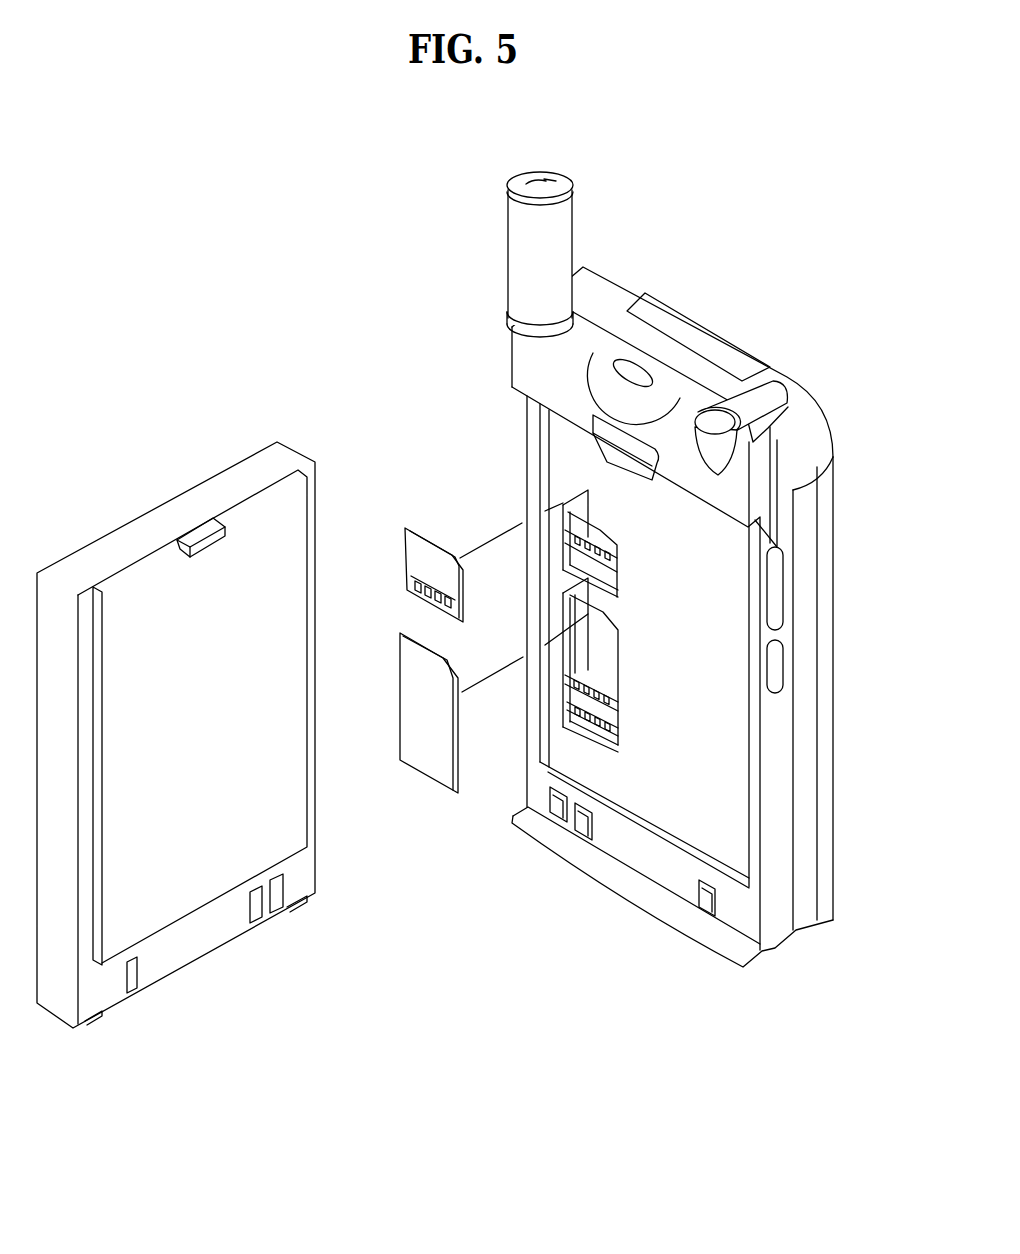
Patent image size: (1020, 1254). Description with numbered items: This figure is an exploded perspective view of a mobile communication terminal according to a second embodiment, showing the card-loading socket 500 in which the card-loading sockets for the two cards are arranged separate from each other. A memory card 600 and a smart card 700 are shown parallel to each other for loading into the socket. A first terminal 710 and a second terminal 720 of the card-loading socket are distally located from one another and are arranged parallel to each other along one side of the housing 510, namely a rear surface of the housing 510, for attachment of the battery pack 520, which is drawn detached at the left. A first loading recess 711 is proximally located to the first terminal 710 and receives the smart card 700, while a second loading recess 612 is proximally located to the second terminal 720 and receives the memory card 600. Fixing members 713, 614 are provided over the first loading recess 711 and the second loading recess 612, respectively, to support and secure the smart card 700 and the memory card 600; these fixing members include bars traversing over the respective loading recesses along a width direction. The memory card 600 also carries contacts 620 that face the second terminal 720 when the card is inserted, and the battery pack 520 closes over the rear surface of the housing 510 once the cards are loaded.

The card-loading socket 500 is at (725, 283).
The housing 510 is at (837, 603).
The battery pack 520 is at (143, 510).
The memory card 600 is at (417, 522).
The SIM card contact terminals 620 is at (408, 592).
The fixing member 614 is at (565, 533).
The second loading recess 612 is at (610, 543).
The second terminal 720 is at (618, 568).
The smart card 700 is at (420, 773).
The first terminal 710 is at (617, 732).
The first loading recess 711 is at (610, 653).
The fixing member 713 is at (615, 718).